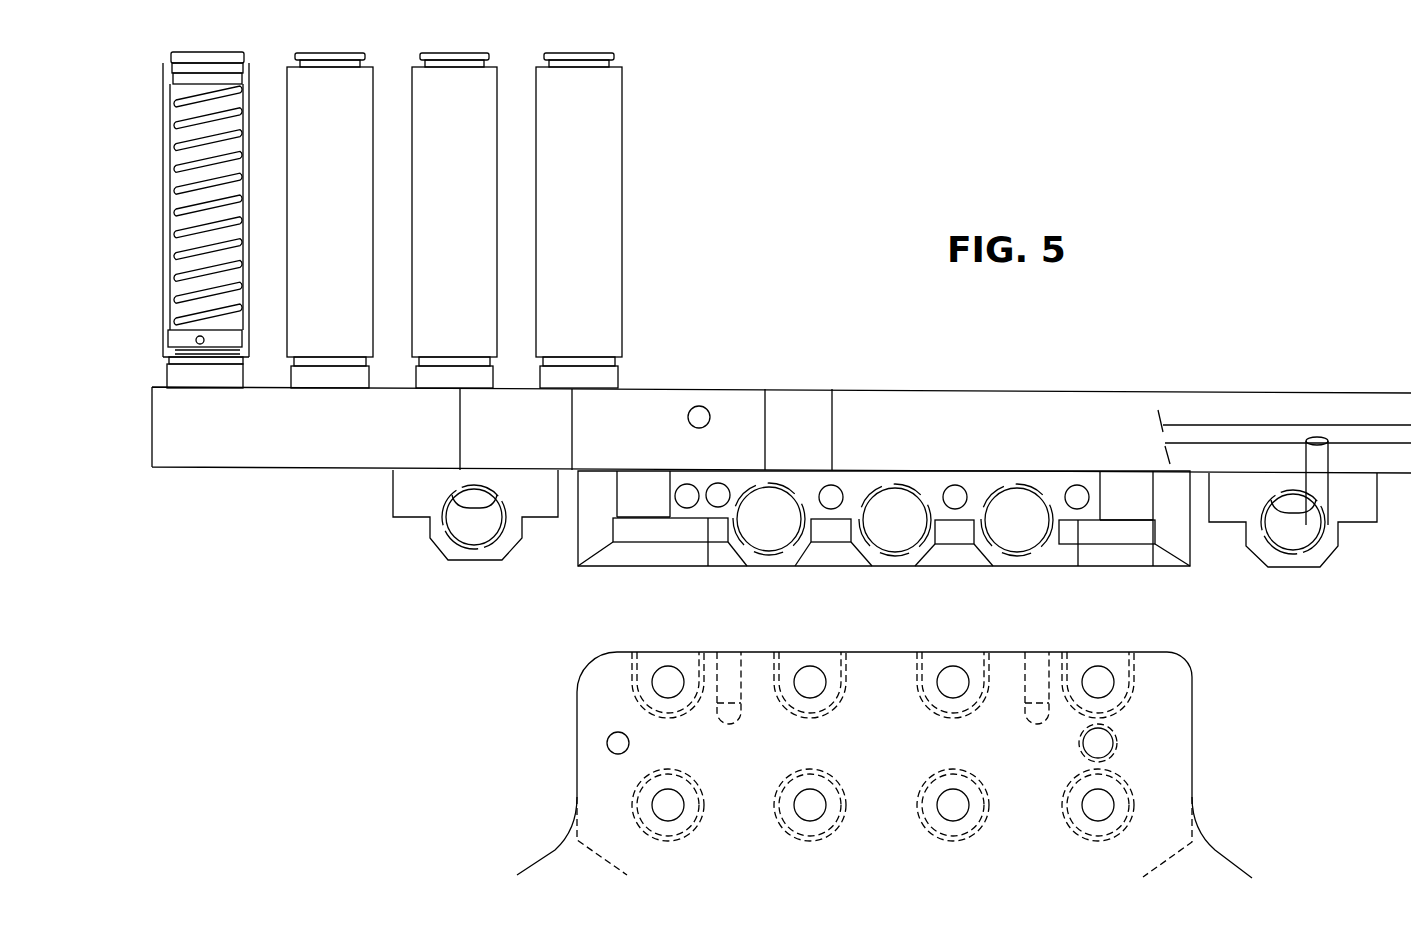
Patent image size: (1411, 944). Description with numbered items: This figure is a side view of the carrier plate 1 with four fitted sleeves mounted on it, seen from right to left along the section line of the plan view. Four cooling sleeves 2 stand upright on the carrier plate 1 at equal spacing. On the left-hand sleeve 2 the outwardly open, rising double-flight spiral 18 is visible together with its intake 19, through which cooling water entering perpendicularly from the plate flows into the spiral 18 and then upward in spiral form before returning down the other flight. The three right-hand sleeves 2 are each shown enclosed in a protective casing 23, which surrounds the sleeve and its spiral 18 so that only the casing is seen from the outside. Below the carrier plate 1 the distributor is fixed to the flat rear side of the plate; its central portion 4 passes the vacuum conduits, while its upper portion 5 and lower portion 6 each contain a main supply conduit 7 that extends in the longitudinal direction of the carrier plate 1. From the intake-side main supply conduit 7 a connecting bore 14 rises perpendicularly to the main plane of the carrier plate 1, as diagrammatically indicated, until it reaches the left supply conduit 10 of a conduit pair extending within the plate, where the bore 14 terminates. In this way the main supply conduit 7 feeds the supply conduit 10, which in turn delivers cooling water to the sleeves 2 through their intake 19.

The carrier plate 1 is at (1104, 412).
The sleeve 2 is at (185, 80).
The central portion 4 is at (632, 535).
The upper portion 5 is at (1337, 510).
The lower portion 6 is at (392, 512).
The main supply conduit 7 is at (463, 528).
The supply conduit 10 is at (1189, 432).
The connecting bore 14 is at (1317, 457).
The spiral 18 is at (172, 260).
The intake 19 is at (200, 337).
The protective casing 23 is at (580, 205).